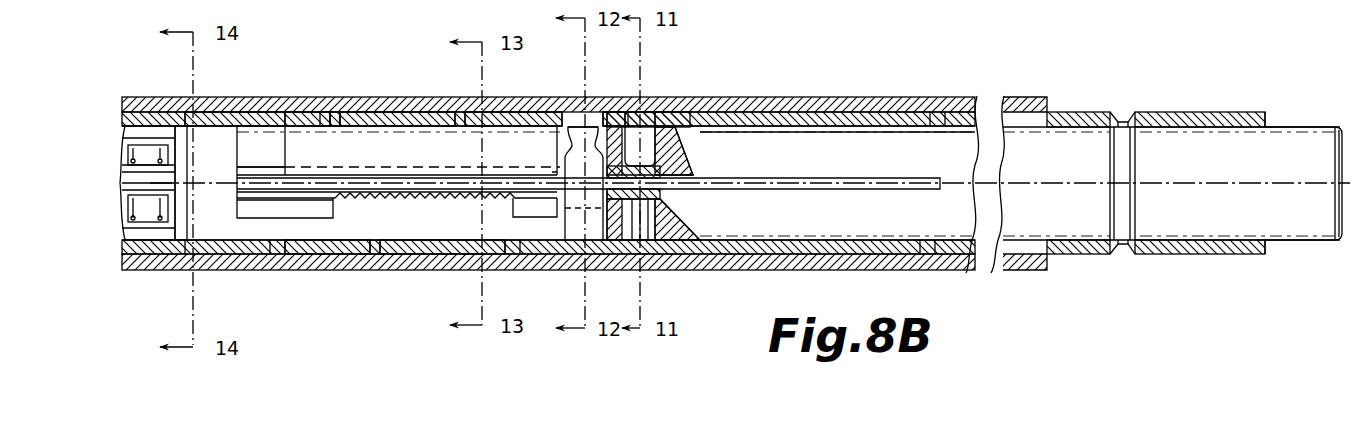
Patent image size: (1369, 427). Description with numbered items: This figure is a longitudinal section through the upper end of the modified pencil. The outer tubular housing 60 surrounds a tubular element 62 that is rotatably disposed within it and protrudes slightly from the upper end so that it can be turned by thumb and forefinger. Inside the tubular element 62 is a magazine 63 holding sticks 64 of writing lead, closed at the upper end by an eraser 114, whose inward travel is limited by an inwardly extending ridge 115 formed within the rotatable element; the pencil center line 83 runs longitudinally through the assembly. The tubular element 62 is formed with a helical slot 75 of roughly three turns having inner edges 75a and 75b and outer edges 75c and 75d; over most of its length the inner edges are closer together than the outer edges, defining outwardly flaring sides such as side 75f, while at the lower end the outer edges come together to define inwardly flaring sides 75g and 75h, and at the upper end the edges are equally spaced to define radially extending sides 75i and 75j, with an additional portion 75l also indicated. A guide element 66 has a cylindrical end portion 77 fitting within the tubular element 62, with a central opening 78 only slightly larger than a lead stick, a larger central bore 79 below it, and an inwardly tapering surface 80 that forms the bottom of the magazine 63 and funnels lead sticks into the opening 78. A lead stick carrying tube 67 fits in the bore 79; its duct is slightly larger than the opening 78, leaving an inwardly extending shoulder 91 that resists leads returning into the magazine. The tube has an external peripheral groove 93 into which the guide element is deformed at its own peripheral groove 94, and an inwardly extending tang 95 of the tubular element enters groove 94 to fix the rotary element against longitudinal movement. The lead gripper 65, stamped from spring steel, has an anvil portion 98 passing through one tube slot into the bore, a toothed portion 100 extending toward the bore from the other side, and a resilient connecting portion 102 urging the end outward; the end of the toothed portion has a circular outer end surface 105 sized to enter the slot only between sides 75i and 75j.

The outer tubular housing 60 is at (905, 99).
The tubular element 62 is at (1175, 112).
The magazine 63 is at (945, 218).
The lead stick 64 is at (818, 178).
The lead gripper 65 is at (265, 150).
The guide element 66 is at (613, 232).
The lead stick carrying tube 67 is at (152, 135).
The helical slot 75 is at (388, 254).
The inner slot edge 75a is at (303, 124).
The inner slot edge 75b is at (328, 126).
The outer slot edge 75c is at (360, 256).
The outer slot edge 75d is at (418, 256).
The outwardly flaring slot side 75f is at (338, 112).
The inwardly flaring slot side 75g is at (188, 126).
The inwardly flaring slot side 75h is at (200, 126).
The radially extending slot side 75i is at (572, 126).
The radially extending slot side 75j is at (625, 118).
The tube wall portion 75l is at (325, 112).
The cylindrical end portion 77 is at (685, 140).
The central opening 78 is at (670, 180).
The central bore 79 is at (595, 205).
The inwardly tapering surface 80 is at (688, 220).
The center line 83 is at (1295, 183).
The inwardly extending shoulder 91 is at (655, 205).
The external peripheral groove 93 is at (640, 205).
The peripheral groove 94 is at (628, 205).
The inwardly extending tang 95 is at (640, 112).
The anvil portion 98 is at (512, 159).
The toothed portion 100 is at (483, 221).
The connecting portion 102 is at (268, 227).
The circular outer end surface 105 is at (588, 126).
The eraser 114 is at (1345, 130).
The inwardly extending ridge 115 is at (1124, 228).